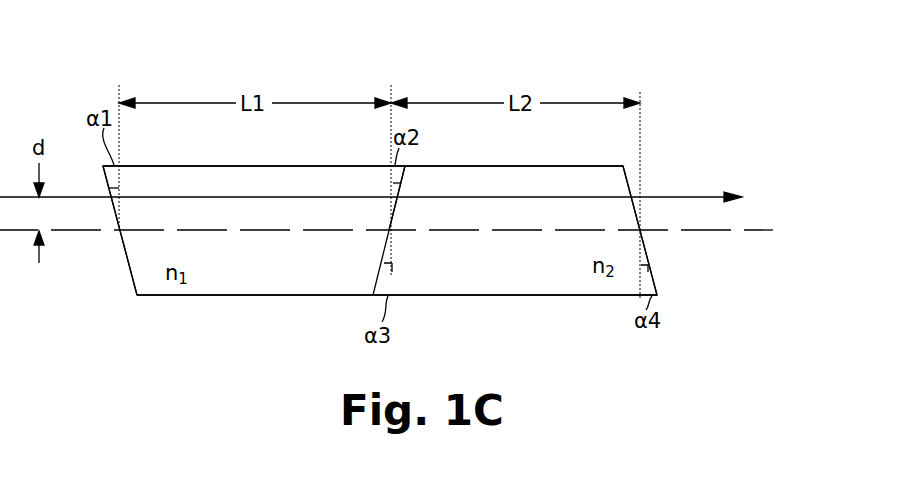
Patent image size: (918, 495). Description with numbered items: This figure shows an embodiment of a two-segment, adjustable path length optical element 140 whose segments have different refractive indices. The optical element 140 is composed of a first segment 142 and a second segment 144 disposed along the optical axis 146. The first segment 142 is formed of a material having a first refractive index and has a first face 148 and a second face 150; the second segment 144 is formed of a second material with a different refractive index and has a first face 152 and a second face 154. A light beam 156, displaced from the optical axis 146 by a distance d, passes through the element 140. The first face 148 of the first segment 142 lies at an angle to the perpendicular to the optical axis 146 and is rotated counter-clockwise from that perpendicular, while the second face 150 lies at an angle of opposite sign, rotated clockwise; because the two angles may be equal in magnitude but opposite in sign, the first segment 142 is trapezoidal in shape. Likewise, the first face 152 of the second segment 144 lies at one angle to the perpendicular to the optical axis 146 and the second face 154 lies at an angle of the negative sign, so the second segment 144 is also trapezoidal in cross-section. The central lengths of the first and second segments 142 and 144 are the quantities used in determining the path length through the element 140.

The optical element 140 is at (702, 100).
The first segment 142 is at (210, 296).
The second segment 144 is at (512, 296).
The optical axis 146 is at (764, 233).
The first face 148 is at (126, 266).
The second face 150 is at (382, 272).
The first face 152 is at (402, 177).
The second face 154 is at (650, 254).
The light beam 156 is at (695, 196).